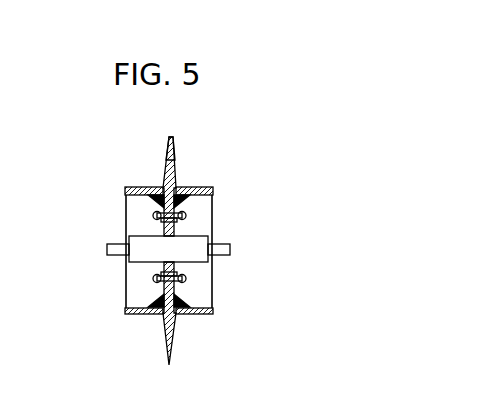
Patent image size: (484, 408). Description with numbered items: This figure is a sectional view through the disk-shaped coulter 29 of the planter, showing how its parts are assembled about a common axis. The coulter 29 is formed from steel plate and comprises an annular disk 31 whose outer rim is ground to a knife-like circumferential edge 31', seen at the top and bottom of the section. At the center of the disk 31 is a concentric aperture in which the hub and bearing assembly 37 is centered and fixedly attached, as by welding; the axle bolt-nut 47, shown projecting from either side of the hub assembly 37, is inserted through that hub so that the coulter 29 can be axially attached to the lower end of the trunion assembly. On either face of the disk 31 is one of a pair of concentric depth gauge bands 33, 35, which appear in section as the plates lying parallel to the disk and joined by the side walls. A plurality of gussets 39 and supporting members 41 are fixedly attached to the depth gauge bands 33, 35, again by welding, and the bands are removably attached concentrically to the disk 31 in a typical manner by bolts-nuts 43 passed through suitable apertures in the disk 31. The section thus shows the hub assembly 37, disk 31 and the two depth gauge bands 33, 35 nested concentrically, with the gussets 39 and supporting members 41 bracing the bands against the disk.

The coulter 29 is at (291, 114).
The annular disk 31 is at (138, 251).
The knife-like circumferential edge 31' is at (196, 148).
The depth gauge band 33 is at (138, 189).
The depth gauge band 35 is at (209, 186).
The hub and bearing assembly 37 is at (200, 247).
The gusset 39 is at (186, 199).
The supporting member 41 is at (184, 217).
The bolt-nut 43 is at (160, 219).
The axle bolt-nut 47 is at (230, 249).